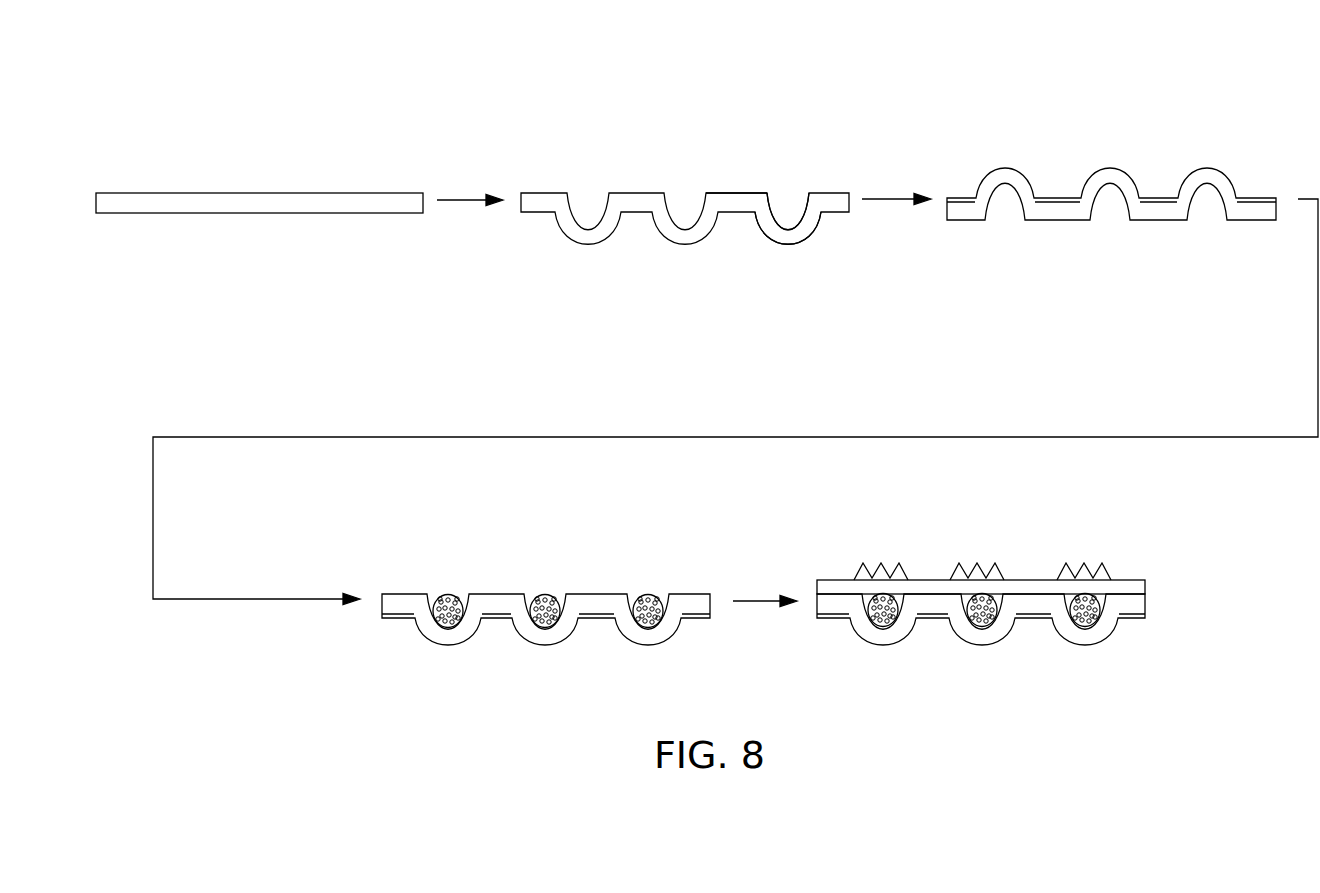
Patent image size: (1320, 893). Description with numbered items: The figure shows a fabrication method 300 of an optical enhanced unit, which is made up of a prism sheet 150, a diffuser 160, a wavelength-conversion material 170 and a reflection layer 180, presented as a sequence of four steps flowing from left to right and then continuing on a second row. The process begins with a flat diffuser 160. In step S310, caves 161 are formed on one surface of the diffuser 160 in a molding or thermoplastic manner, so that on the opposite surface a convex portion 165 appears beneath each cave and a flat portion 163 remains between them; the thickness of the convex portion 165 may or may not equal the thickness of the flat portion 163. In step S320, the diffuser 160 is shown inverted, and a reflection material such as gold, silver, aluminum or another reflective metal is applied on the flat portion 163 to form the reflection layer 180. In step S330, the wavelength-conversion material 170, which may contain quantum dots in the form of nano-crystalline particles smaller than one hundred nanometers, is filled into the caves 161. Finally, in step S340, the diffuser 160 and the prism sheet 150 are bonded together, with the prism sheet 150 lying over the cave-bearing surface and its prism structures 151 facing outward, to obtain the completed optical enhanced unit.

The fabrication method 300 is at (172, 57).
The step of forming caves S310 is at (672, 162).
The step of applying reflection material S320 is at (1103, 142).
The step of filling wavelength-conversion material S330 is at (532, 565).
The step of bonding S340 is at (967, 540).
The diffuser 160 is at (537, 196).
The caves 161 is at (789, 218).
The flat portion 163 is at (720, 193).
The convex portion 165 is at (797, 243).
The reflection layer 180 is at (1158, 198).
The wavelength-conversion material 170 is at (649, 594).
The prism sheet 150 is at (1140, 586).
The protrusions of cover layer 151 is at (1073, 565).